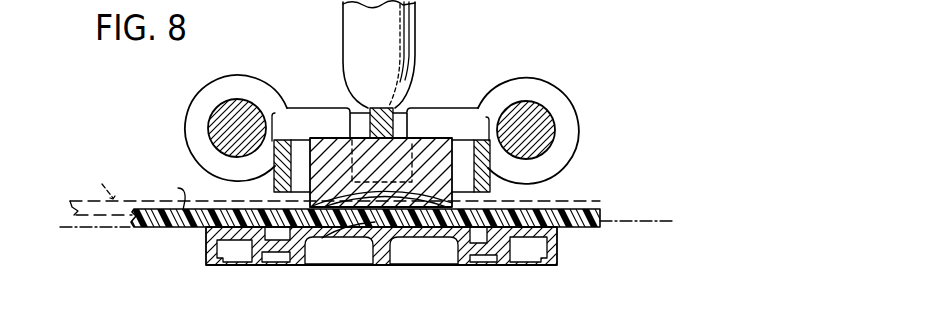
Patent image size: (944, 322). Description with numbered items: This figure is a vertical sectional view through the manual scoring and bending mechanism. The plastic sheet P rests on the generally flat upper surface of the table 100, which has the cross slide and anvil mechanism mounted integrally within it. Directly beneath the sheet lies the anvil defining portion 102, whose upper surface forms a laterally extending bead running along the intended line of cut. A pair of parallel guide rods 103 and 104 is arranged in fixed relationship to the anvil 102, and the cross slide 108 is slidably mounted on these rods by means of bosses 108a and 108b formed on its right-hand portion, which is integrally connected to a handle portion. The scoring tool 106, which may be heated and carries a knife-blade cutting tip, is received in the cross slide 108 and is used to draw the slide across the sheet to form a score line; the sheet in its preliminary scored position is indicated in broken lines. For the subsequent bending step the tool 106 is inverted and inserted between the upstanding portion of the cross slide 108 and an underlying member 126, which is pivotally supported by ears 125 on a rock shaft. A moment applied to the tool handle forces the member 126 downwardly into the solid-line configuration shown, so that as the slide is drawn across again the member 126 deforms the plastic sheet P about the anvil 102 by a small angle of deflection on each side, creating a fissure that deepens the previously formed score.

The table 100 is at (613, 222).
The anvil defining portion 102 is at (428, 233).
The guide rod 103 is at (237, 99).
The guide rod 104 is at (527, 101).
The scoring tool 106 is at (415, 60).
The cross slide 108 is at (429, 108).
The boss 108a is at (184, 132).
The boss 108b is at (577, 107).
The ears 125 is at (328, 204).
The underlying member 126 is at (340, 138).
The plastic sheet P is at (136, 191).